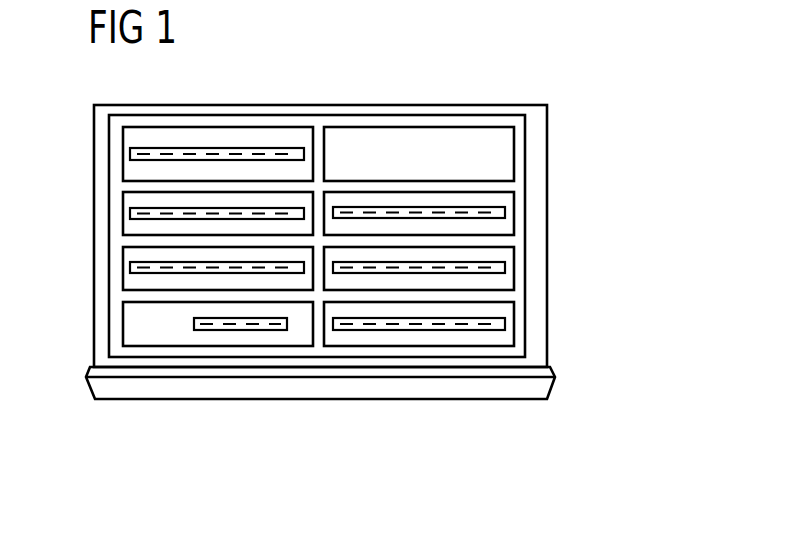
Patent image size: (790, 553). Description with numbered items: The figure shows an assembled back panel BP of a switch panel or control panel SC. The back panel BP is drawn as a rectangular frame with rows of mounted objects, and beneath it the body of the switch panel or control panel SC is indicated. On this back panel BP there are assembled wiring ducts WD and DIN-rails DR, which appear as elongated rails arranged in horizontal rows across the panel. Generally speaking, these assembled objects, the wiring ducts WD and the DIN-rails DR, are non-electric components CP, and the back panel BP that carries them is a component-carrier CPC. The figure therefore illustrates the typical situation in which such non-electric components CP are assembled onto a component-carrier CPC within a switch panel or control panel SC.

The switch panel or control panel SC is at (393, 397).
The wiring ducts WD is at (317, 123).
The non-electric components CP is at (318, 236).
The DIN-rails DR is at (505, 212).
The back panel BP is at (503, 153).
The component-carrier CPC is at (535, 182).